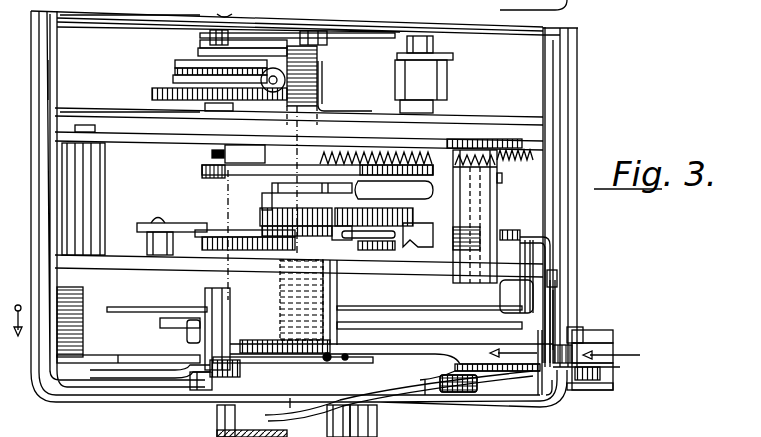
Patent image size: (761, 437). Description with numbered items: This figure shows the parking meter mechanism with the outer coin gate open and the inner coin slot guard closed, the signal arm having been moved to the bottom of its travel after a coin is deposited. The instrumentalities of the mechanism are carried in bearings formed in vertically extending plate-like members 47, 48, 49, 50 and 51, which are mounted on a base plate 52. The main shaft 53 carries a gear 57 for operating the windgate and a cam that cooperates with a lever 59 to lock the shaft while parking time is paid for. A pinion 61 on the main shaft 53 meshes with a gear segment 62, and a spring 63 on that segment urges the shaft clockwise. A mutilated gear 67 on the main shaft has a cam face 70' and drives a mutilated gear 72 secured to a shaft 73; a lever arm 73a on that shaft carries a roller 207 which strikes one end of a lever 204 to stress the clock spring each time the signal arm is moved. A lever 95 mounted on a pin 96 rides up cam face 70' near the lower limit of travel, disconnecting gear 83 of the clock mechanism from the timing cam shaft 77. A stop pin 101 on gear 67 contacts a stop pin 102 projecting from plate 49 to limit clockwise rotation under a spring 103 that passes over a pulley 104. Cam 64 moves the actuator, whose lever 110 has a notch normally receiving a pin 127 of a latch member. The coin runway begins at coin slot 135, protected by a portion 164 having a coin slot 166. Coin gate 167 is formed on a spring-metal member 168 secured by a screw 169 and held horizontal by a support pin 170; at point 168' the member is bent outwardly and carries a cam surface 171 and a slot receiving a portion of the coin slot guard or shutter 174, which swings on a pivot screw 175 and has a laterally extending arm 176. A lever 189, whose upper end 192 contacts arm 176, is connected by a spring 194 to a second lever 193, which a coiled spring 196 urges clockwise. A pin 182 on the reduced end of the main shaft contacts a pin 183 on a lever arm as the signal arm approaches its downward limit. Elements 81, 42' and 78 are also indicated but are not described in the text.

The lever 81 is at (217, 14).
The back plate 51 is at (116, 28).
The base plate 52 is at (70, 78).
The plate-like member 50 is at (112, 108).
The lever 204 is at (210, 41).
The gear 83 is at (160, 90).
The pin 96 is at (320, 89).
The lever 95 is at (330, 73).
The stop pin 102 is at (338, 150).
The roller 207 is at (327, 42).
The lever arm 73a is at (372, 55).
The shaft 73 is at (440, 45).
The pulley 104 is at (469, 148).
The spring 103 is at (519, 148).
The frame 42' is at (581, 195).
The timing cam shaft 77 is at (212, 155).
The stop pin 101 is at (268, 156).
The mutilated gear 67 is at (202, 173).
The cam face 70' is at (317, 181).
The support plate 49 is at (133, 143).
The mutilated gear 72 is at (502, 178).
The cam 64 is at (378, 198).
The spring 63 is at (499, 210).
The laterally extending arm 176 is at (515, 237).
The lever 59 is at (205, 222).
The pinion 61 is at (258, 214).
The gear 57 is at (202, 245).
The gear segment 62 is at (397, 232).
The plate-like member 48 is at (110, 270).
The second lever 193 is at (155, 307).
The spring 194 is at (242, 305).
The spring 196 is at (340, 290).
The lever 189 is at (407, 307).
The upper end 192 is at (520, 292).
The pivot screw 175 is at (557, 280).
The coin slot guard 174 is at (555, 320).
The coin slot 135 is at (578, 330).
The portion 164 is at (614, 336).
The lever 110 is at (160, 323).
The pin 127 is at (187, 330).
The main shaft 53 is at (340, 322).
The support plate 47 is at (493, 345).
The coin slot 166 is at (613, 357).
The bar 78 is at (90, 376).
The support pin 170 is at (365, 390).
The cam surface 171 is at (480, 384).
The coin gate 167 is at (606, 388).
The member 168 is at (558, 404).
The screw 169 is at (200, 396).
The pin 182 is at (290, 402).
The pin 183 is at (318, 400).
The point 168' is at (439, 403).